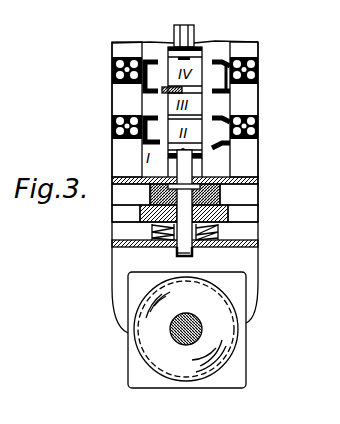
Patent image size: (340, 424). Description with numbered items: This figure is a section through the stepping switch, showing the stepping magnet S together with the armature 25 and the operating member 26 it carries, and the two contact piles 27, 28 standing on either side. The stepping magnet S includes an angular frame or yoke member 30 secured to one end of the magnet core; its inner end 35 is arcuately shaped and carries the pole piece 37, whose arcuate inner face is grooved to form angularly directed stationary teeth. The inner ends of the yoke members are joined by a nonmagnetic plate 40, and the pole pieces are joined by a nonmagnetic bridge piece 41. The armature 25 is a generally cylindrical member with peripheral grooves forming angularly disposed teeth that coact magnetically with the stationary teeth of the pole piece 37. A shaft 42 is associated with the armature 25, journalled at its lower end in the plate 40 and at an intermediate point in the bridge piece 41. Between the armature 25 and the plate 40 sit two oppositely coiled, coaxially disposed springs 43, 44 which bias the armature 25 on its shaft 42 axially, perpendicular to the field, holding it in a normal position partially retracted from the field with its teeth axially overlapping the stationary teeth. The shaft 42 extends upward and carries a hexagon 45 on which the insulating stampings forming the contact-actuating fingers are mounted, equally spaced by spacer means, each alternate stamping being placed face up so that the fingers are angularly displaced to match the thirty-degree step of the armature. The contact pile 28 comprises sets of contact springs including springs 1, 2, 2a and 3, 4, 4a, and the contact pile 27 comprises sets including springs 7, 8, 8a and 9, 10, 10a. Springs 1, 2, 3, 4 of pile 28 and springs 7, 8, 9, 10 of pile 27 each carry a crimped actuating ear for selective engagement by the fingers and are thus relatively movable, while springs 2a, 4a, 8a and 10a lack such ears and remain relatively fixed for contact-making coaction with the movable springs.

The contact pile 28 is at (133, 38).
The contact pile 27 is at (242, 36).
The hexagon 45 is at (172, 39).
The contact spring 4a is at (112, 54).
The contact spring 4 is at (112, 68).
The contact spring 3 is at (112, 84).
The contact spring 2a is at (112, 111).
The contact spring 2 is at (112, 125).
The contact spring 1 is at (112, 135).
The contact spring 10a is at (258, 56).
The contact spring 10 is at (258, 70).
The contact spring 9 is at (258, 85).
The contact spring 8a is at (258, 112).
The contact spring 8 is at (258, 127).
The contact spring 7 is at (258, 145).
The operating member 26 is at (202, 154).
The nonmagnetic bridge piece 41 is at (258, 179).
The armature 25 is at (224, 191).
The pole piece 37 is at (247, 209).
The inner end 35 is at (130, 229).
The spring 43 is at (231, 227).
The nonmagnetic plate 40 is at (258, 250).
The shaft 42 is at (178, 256).
The spring 44 is at (178, 252).
The frame or yoke member 30 is at (258, 284).
The stepping magnet S is at (233, 348).